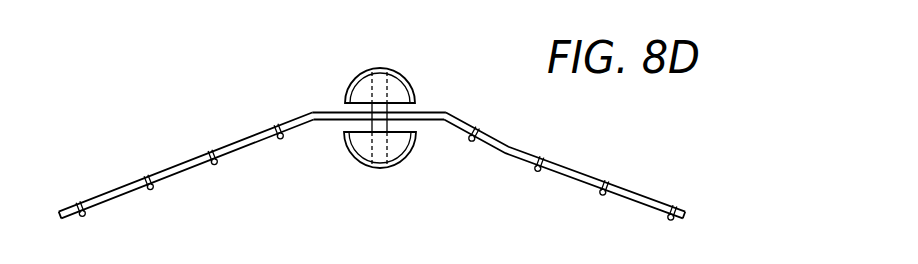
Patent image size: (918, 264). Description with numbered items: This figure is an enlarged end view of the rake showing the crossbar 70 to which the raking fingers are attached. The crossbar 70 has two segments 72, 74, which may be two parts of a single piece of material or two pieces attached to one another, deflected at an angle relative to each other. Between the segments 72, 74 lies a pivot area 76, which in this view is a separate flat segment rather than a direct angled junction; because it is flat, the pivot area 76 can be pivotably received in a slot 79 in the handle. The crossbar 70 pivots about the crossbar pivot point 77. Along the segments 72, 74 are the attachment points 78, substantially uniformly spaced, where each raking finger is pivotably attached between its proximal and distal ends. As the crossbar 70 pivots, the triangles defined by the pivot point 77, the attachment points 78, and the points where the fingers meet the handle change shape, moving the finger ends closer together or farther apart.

The crossbar 70 is at (583, 116).
The segment 72 is at (612, 164).
The segment 74 is at (201, 140).
The pivot area 76 is at (428, 111).
The crossbar pivot point 77 is at (401, 83).
The attachment points 78 is at (146, 182).
The slot 79 is at (336, 131).